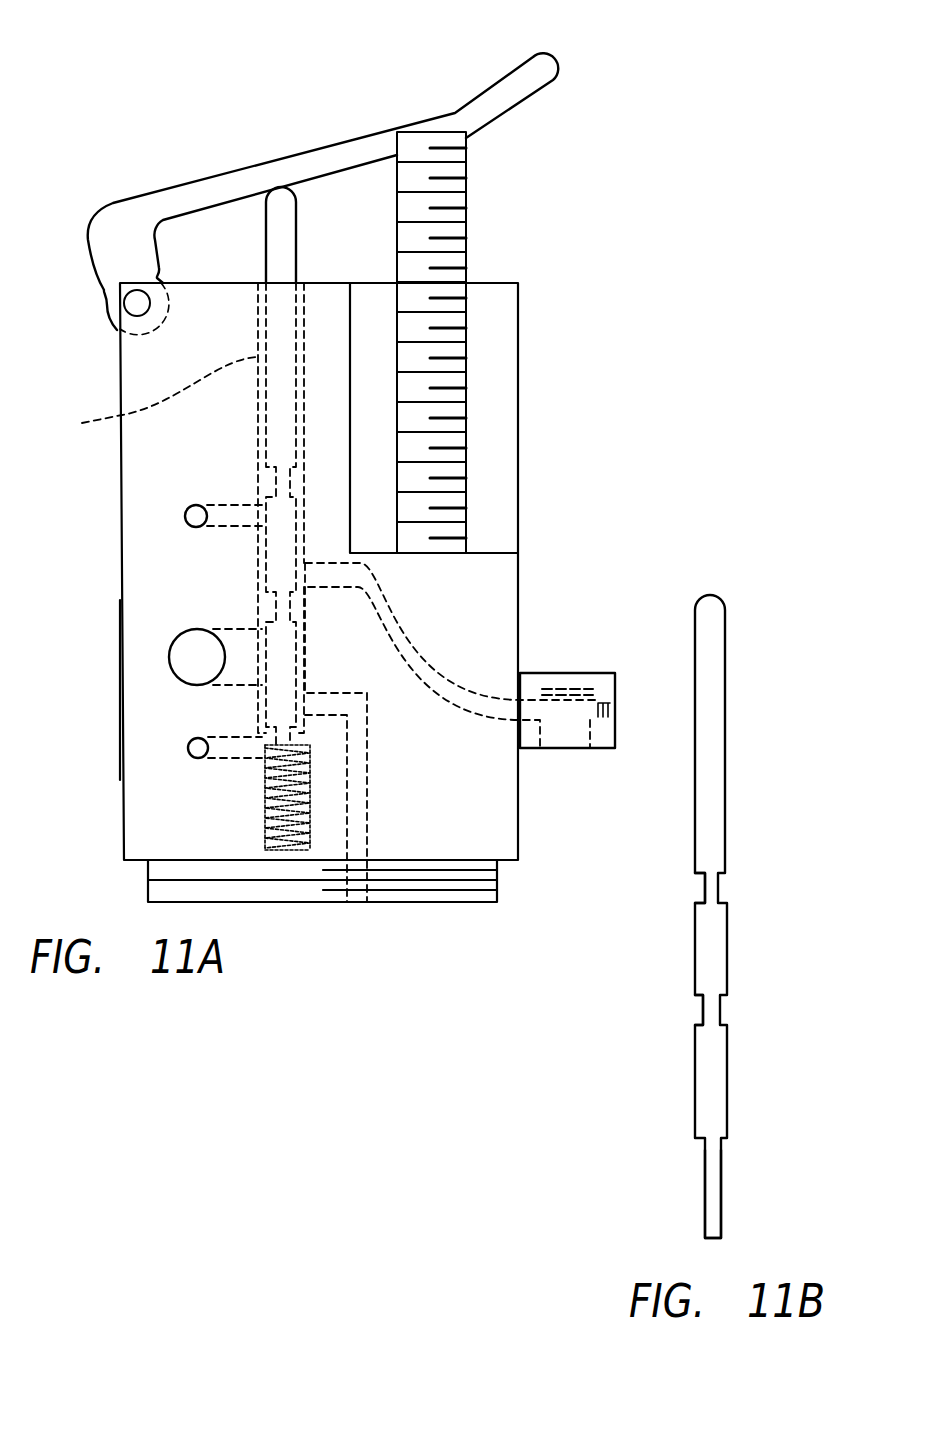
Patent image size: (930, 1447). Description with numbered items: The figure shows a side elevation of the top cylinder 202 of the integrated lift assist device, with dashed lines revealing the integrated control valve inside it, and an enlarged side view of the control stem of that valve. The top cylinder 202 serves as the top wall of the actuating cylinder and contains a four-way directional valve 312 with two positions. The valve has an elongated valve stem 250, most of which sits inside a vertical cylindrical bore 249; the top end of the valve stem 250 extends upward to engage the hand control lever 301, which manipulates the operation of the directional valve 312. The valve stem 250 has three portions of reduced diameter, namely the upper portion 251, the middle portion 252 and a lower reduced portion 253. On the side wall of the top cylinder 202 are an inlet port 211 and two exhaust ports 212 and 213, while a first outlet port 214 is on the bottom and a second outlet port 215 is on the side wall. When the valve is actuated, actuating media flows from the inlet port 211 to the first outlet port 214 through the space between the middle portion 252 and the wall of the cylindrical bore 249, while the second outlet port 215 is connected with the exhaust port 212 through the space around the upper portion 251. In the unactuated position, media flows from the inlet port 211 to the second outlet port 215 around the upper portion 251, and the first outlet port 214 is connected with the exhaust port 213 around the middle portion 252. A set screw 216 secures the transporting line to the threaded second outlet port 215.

In FIG. 11A, the top cylinder 202 is at (560, 313).
In FIG. 11A, the hand control lever 301 is at (561, 62).
In FIG. 11A, the valve stem 250 is at (297, 242).
In FIG. 11B, the valve stem 250 is at (708, 592).
In FIG. 11A, the cylindrical bore 249 is at (149, 398).
In FIG. 11A, the exhaust port 212 is at (185, 516).
In FIG. 11A, the inlet port 211 is at (169, 657).
In FIG. 11A, the four-way directional valve 312 is at (122, 688).
In FIG. 11A, the exhaust port 213 is at (188, 748).
In FIG. 11A, the first outlet port 214 is at (358, 903).
In FIG. 11A, the second outlet port 215 is at (568, 750).
In FIG. 11A, the set screw 216 is at (618, 710).
In FIG. 11B, the upper portion 251 is at (703, 875).
In FIG. 11B, the middle portion 252 is at (703, 1014).
In FIG. 11B, the reduced-diameter portion 253 is at (703, 1186).